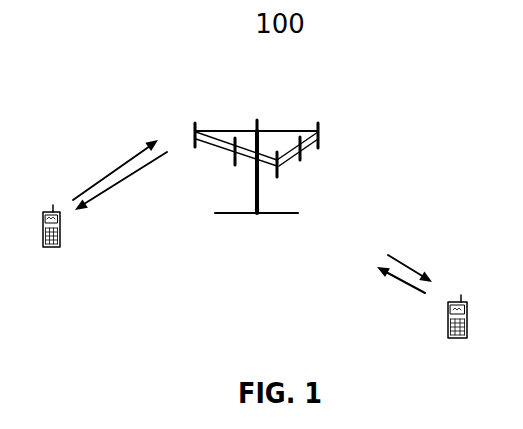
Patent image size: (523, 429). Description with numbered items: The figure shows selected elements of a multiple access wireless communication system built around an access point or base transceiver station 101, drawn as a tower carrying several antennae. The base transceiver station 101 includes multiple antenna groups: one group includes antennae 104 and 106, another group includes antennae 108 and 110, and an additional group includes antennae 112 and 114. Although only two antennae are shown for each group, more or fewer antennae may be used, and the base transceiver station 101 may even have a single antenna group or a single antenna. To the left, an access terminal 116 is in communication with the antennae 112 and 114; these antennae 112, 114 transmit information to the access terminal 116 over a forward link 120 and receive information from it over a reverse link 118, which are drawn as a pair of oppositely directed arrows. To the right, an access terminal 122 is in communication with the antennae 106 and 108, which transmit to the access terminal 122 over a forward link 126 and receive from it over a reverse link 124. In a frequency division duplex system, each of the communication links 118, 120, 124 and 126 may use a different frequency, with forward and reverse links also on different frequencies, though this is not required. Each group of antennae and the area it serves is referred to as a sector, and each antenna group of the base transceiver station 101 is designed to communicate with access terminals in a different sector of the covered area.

The base transceiver station 101 is at (243, 215).
The antenna 104 is at (277, 177).
The antenna 106 is at (300, 158).
The antenna 108 is at (318, 148).
The antenna 110 is at (258, 124).
The antenna 112 is at (196, 129).
The antenna 114 is at (236, 168).
The access terminal 116 is at (53, 206).
The reverse link 118 is at (115, 170).
The forward link 120 is at (127, 177).
The access terminal 122 is at (461, 296).
The reverse link 124 is at (396, 278).
The forward link 126 is at (412, 270).